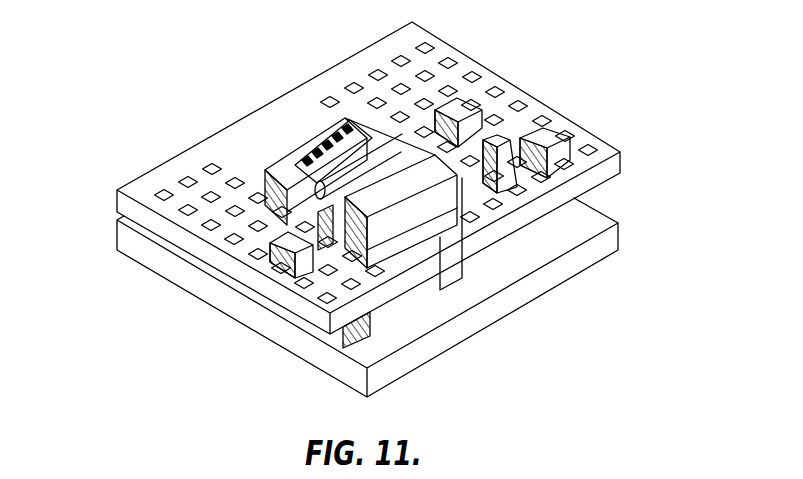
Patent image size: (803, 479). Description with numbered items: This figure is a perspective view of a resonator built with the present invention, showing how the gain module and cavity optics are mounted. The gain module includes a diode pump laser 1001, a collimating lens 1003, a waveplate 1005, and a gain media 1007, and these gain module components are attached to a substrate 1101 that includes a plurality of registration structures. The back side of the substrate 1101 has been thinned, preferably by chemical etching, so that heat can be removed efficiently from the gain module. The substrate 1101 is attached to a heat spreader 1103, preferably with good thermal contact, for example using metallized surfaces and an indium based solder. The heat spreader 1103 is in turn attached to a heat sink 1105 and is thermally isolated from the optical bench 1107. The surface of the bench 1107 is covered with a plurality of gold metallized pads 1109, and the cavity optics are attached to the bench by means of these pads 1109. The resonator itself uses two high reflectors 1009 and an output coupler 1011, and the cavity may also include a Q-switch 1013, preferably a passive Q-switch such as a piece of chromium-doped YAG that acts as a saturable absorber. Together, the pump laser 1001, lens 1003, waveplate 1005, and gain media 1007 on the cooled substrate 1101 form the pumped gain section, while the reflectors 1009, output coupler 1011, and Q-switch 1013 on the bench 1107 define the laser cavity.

The diode pump laser 1001 is at (279, 167).
The collimating lens 1003 is at (348, 118).
The waveplate 1005 is at (348, 232).
The gain media 1007 is at (368, 228).
The high reflectors 1009 is at (456, 107).
The output coupler 1011 is at (548, 152).
The Q-switch 1013 is at (506, 186).
The substrate 1101 is at (452, 223).
The heat spreader 1103 is at (277, 197).
The heat sink 1105 is at (567, 235).
The optical bench 1107 is at (547, 113).
The gold metallized pads 1109 is at (518, 105).